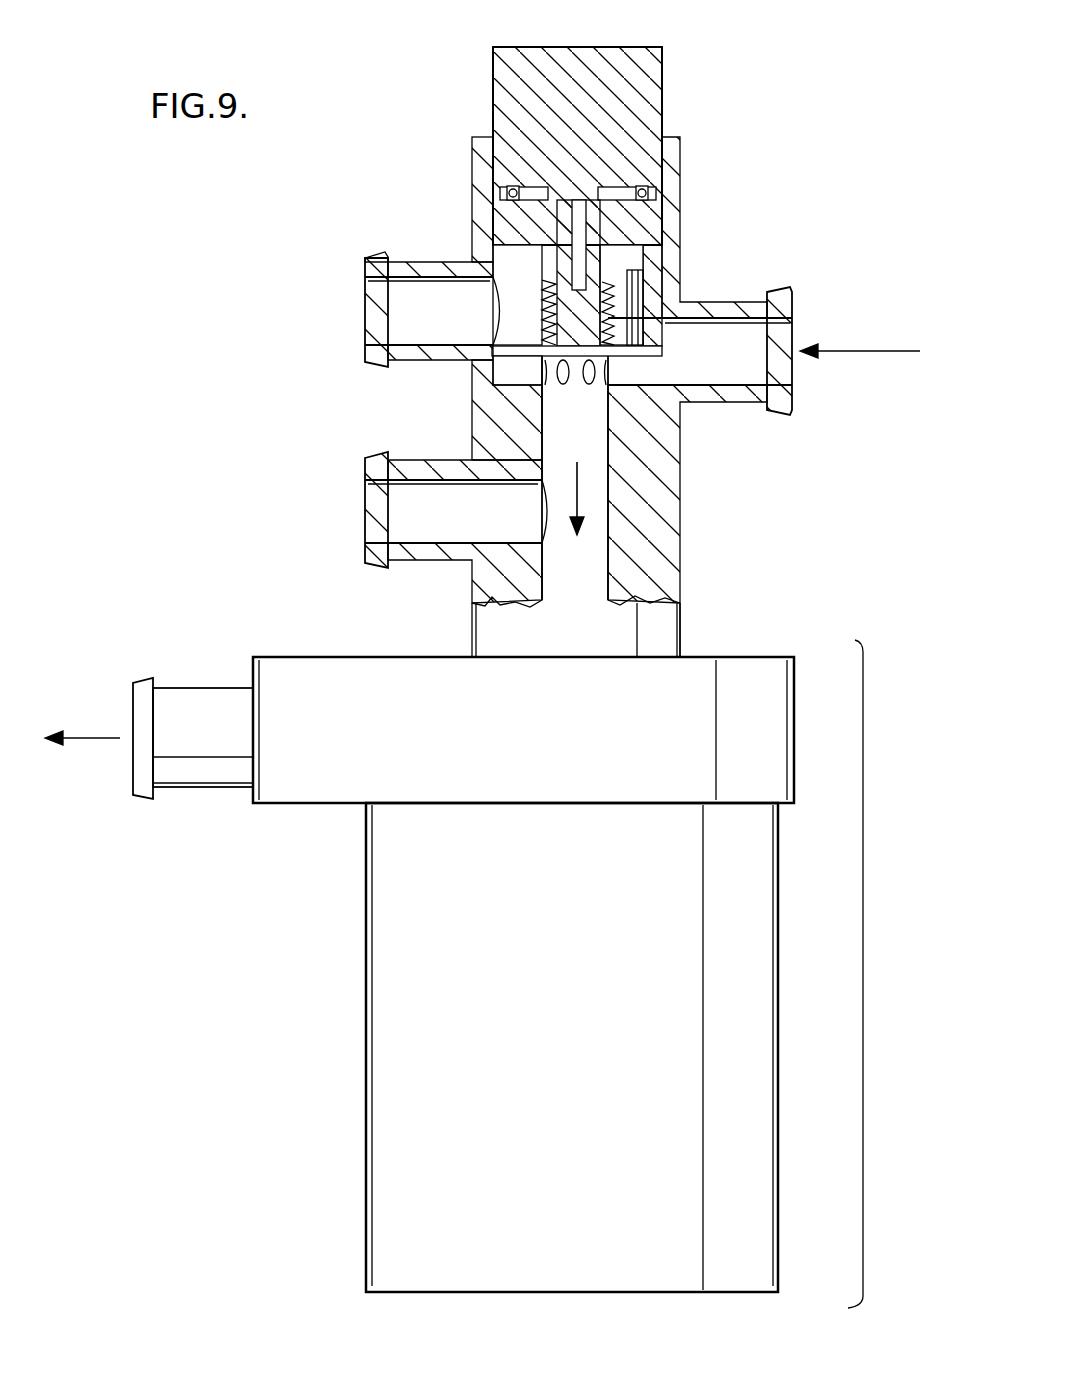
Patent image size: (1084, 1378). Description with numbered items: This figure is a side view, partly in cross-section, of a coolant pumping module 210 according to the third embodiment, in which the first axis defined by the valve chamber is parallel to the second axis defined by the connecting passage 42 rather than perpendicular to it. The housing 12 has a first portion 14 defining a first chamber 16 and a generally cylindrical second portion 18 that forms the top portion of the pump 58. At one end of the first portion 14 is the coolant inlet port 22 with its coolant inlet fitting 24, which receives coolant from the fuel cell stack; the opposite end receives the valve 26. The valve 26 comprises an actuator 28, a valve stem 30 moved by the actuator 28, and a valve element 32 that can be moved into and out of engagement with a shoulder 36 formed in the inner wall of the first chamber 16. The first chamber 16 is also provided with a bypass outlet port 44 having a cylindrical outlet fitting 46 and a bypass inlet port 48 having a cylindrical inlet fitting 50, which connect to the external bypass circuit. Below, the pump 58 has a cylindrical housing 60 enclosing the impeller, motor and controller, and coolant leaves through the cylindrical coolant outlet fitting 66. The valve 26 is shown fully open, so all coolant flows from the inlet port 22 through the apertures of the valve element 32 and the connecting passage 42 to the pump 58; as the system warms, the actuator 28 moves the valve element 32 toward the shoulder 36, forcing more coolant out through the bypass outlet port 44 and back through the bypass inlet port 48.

The coolant pumping module 210 is at (383, 203).
The housing 12 is at (665, 213).
The first portion 14 is at (683, 466).
The first chamber 16 is at (590, 497).
The second portion 18 is at (795, 708).
The coolant inlet port 22 is at (722, 337).
The coolant inlet fitting 24 is at (770, 290).
The valve 26 is at (673, 133).
The actuator 28 is at (563, 137).
The valve stem 30 is at (640, 247).
The valve element 32 is at (528, 370).
The shoulder 36 is at (505, 387).
The connecting passage 42 is at (590, 590).
The bypass outlet port 44 is at (455, 290).
The cylindrical outlet fitting 46 is at (372, 258).
The bypass inlet port 48 is at (452, 525).
The cylindrical inlet fitting 50 is at (372, 560).
The pump 58 is at (878, 974).
The cylindrical housing 60 is at (780, 1090).
The cylindrical coolant outlet fitting 66 is at (183, 790).